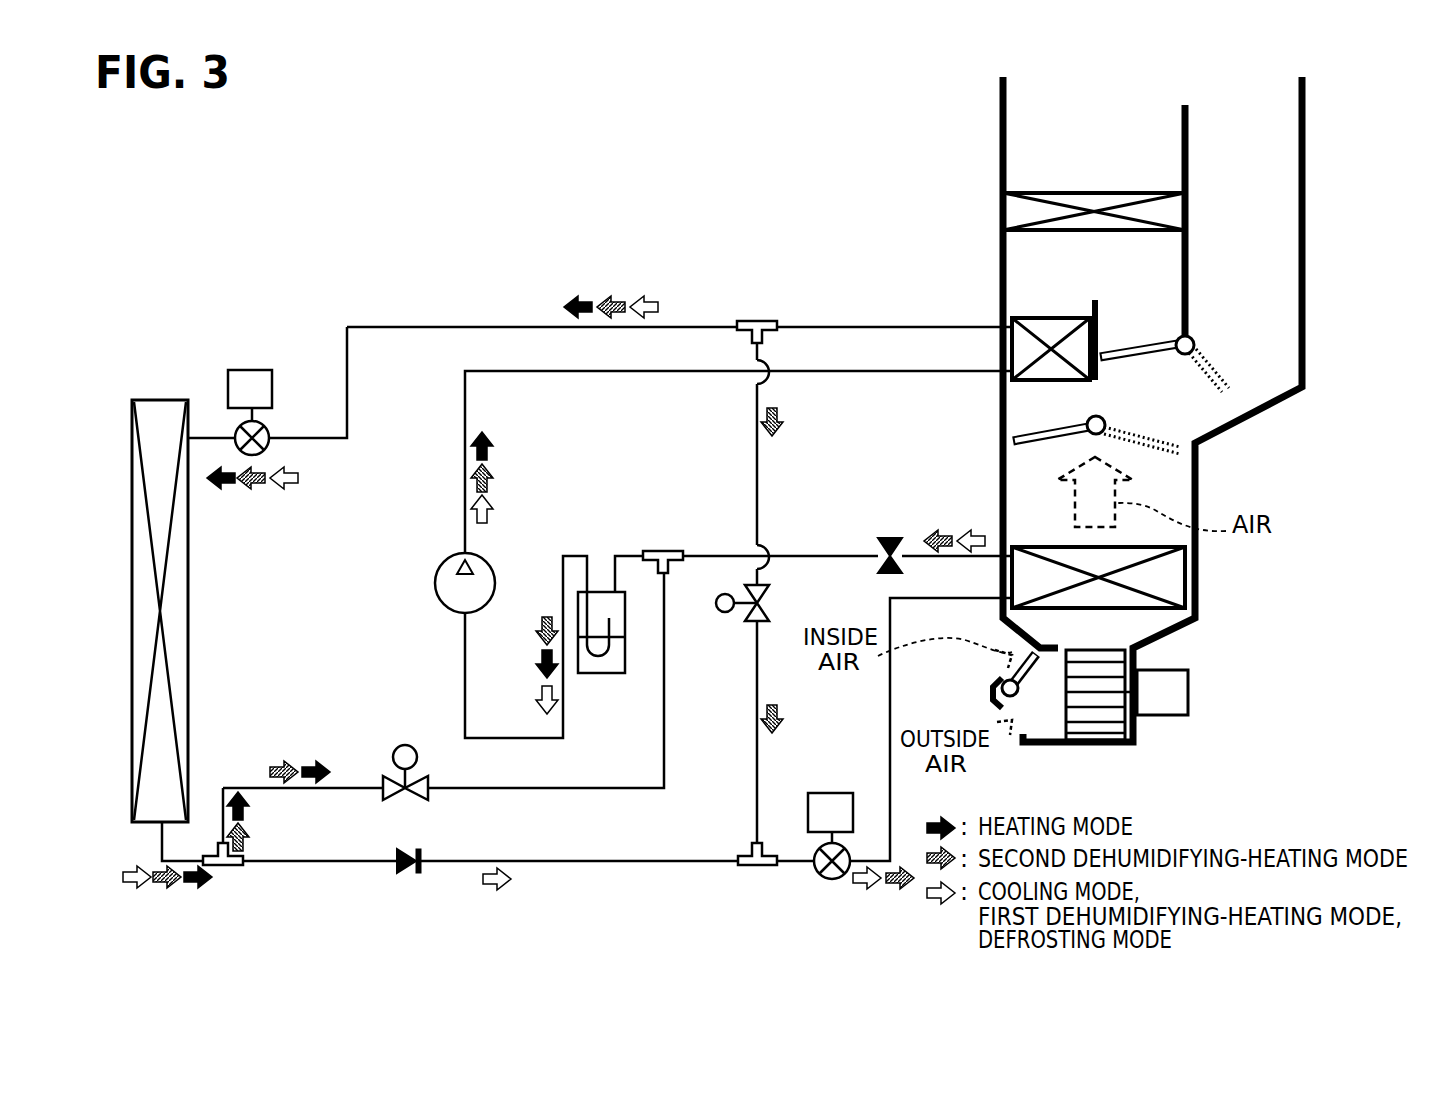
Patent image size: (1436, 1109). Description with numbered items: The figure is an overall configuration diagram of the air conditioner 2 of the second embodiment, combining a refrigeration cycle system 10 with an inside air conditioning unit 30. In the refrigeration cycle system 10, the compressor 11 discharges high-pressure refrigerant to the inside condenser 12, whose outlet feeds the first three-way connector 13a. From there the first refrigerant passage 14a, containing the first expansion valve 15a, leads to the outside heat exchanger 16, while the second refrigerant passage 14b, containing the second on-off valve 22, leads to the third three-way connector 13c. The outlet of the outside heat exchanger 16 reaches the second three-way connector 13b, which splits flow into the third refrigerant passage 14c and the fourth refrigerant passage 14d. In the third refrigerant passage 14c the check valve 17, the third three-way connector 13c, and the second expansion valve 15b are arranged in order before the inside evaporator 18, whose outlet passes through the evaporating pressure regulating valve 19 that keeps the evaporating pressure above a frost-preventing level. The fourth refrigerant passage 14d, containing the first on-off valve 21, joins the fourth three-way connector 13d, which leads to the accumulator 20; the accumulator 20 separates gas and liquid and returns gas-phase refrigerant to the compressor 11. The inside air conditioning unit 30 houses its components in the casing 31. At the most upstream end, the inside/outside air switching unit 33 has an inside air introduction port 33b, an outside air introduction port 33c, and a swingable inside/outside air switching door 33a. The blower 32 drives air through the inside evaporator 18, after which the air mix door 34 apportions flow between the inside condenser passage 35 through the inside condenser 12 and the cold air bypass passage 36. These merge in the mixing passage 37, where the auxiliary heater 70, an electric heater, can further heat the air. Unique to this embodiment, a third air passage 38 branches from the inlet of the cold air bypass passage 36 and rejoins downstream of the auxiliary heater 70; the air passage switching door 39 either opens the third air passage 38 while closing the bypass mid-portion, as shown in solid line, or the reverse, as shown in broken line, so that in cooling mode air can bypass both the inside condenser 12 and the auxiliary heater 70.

The air conditioner 2 is at (828, 285).
The refrigeration cycle system 10 is at (421, 318).
The compressor 11 is at (490, 566).
The inside condenser 12 is at (1056, 316).
The first three-way connector 13a is at (756, 320).
The second three-way connector 13b is at (226, 868).
The third three-way connector 13c is at (758, 868).
The fourth three-way connector 13d is at (662, 548).
The first refrigerant passage 14a is at (307, 436).
The second refrigerant passage 14b is at (755, 436).
The third refrigerant passage 14c is at (325, 864).
The fourth refrigerant passage 14d is at (352, 790).
The first expansion valve 15a is at (252, 370).
The second expansion valve 15b is at (832, 792).
The outside heat exchanger 16 is at (160, 398).
The check valve 17 is at (412, 876).
The inside evaporator 18 is at (1192, 590).
The evaporating pressure regulating valve 19 is at (890, 537).
The accumulator 20 is at (604, 675).
The first on-off valve 21 is at (406, 745).
The second on-off valve 22 is at (716, 603).
The inside air conditioning unit 30 is at (1322, 298).
The casing 31 is at (1085, 745).
The blower 32 is at (1163, 717).
The inside/outside air switching unit 33 is at (974, 698).
The inside/outside air switching door 33a is at (1006, 672).
The inside air introduction port 33b is at (1018, 655).
The outside air introduction port 33c is at (1022, 733).
The air mix door 34 is at (1012, 440).
The inside condenser passage 35 is at (1052, 393).
The cold air bypass passage 36 is at (1142, 316).
The mixing passage 37 is at (1100, 258).
The third air passage 38 is at (1246, 236).
The air passage switching door 39 is at (1217, 432).
The auxiliary heater 70 is at (1070, 192).